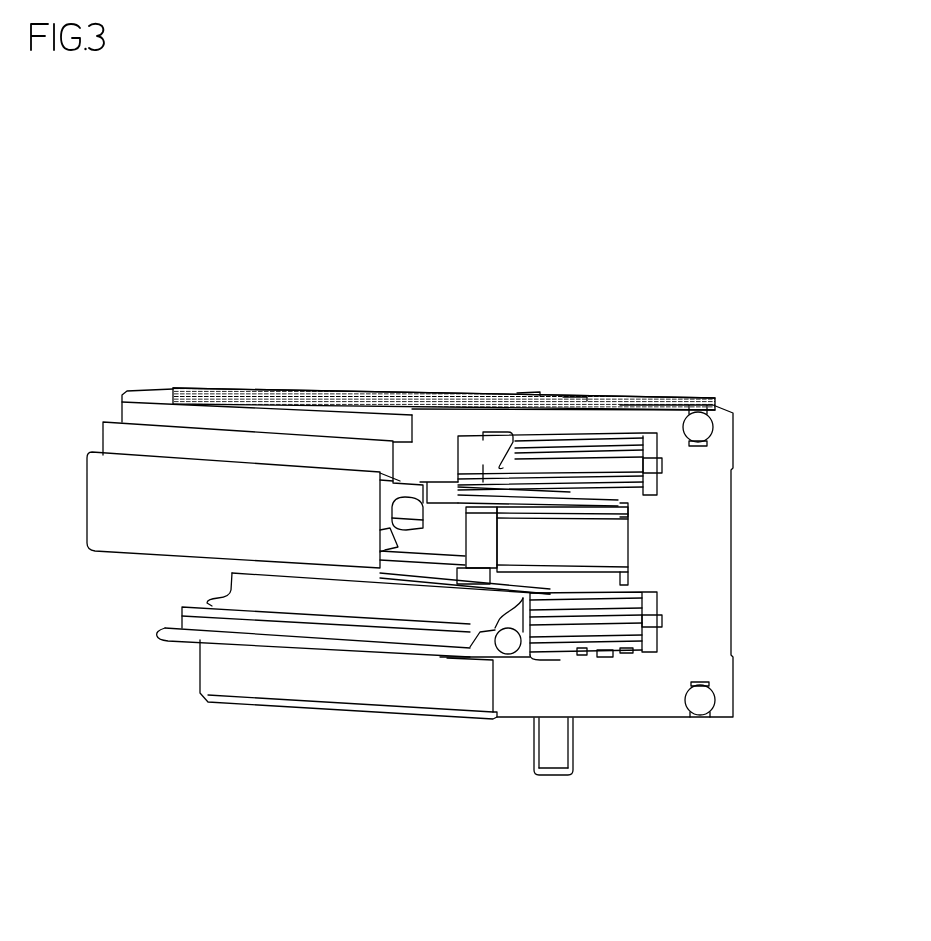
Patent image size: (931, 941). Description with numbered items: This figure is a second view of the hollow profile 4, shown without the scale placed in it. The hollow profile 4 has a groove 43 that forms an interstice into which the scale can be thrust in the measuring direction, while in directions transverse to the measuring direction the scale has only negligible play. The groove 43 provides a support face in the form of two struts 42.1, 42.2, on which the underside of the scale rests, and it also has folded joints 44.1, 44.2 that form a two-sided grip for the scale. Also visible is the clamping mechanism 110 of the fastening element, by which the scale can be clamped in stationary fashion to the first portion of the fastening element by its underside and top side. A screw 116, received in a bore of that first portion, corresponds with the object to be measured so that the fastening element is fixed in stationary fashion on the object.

The hollow profile 4 is at (318, 684).
The groove 43 is at (612, 548).
The strut 42.1 is at (573, 513).
The strut 42.2 is at (557, 563).
The folded joint 44.1 is at (597, 500).
The folded joint 44.2 is at (527, 567).
The clamping mechanism 110 is at (477, 537).
The screw 116 is at (553, 760).